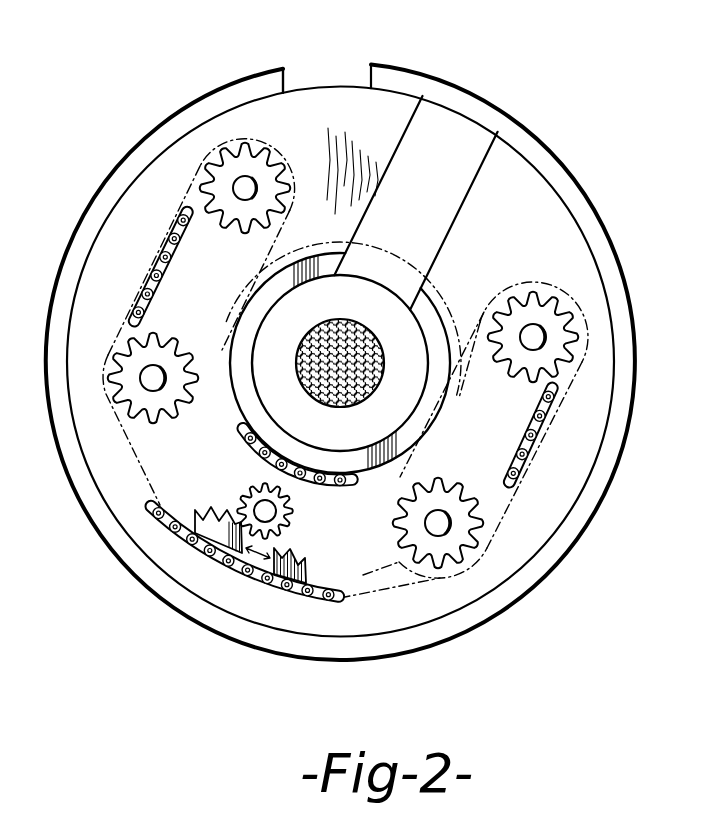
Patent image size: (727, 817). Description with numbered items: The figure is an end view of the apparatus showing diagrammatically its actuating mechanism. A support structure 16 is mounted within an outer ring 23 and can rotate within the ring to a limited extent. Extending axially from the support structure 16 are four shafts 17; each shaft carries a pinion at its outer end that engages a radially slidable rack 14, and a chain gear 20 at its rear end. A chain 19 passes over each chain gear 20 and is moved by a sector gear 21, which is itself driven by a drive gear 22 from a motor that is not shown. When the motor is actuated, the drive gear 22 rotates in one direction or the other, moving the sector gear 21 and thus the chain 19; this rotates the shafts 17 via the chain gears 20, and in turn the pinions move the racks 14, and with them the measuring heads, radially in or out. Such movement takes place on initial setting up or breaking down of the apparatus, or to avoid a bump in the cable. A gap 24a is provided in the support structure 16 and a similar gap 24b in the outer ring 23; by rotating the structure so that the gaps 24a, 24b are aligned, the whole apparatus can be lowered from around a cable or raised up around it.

The rack 14 is at (357, 320).
The support structure 16 is at (566, 228).
The shaft 17 is at (251, 185).
The chain 19 is at (536, 444).
The chain gear 20 is at (166, 337).
The sector gear 21 is at (206, 533).
The drive gear 22 is at (291, 510).
The outer ring 23 is at (535, 148).
The gap 24a is at (461, 130).
The gap 24b is at (333, 80).